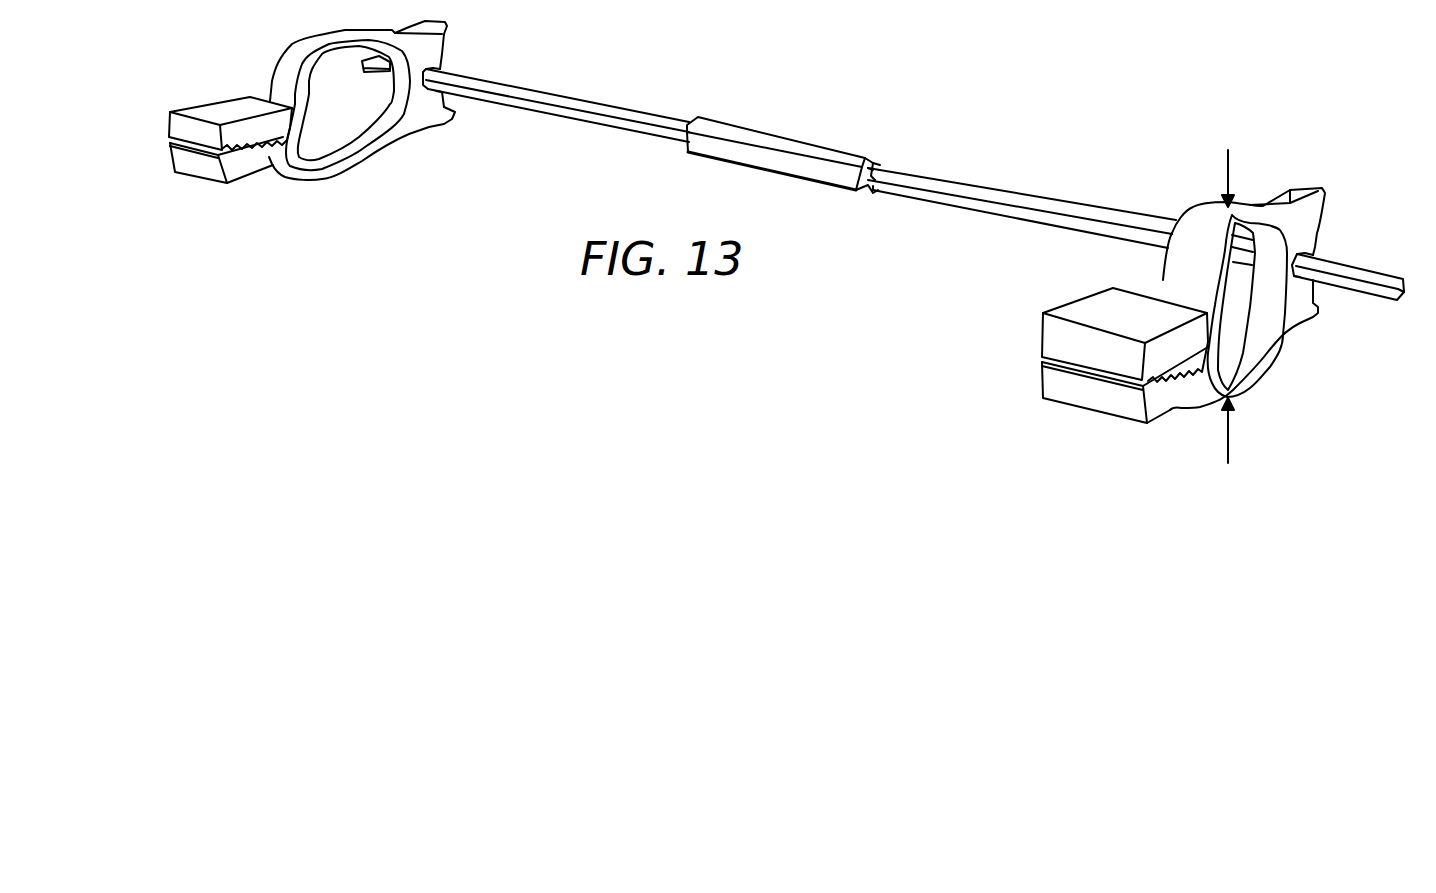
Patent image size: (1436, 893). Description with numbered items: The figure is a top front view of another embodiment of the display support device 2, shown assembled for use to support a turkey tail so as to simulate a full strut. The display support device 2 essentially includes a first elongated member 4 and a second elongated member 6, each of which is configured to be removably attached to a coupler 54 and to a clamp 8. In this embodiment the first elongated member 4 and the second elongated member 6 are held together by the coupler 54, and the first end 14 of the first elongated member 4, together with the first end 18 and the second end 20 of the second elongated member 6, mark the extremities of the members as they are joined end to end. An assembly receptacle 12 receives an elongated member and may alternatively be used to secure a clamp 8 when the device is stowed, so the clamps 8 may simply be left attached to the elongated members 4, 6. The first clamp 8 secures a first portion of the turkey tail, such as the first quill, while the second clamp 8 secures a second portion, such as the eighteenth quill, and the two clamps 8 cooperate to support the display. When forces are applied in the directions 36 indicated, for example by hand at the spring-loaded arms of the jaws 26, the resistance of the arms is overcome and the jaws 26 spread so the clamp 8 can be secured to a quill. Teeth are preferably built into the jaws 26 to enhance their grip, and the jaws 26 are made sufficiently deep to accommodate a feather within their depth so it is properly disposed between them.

The display support device 2 is at (920, 270).
The first elongated member 4 is at (558, 98).
The second elongated member 6 is at (1080, 207).
The clamp 8 is at (242, 172).
The assembly receptacle 12 is at (442, 70).
The first end 14 is at (423, 90).
The first end 18 is at (1378, 275).
The second end 20 is at (873, 185).
The jaws 26 is at (238, 107).
The directions 36 is at (1233, 168).
The coupler 54 is at (777, 138).